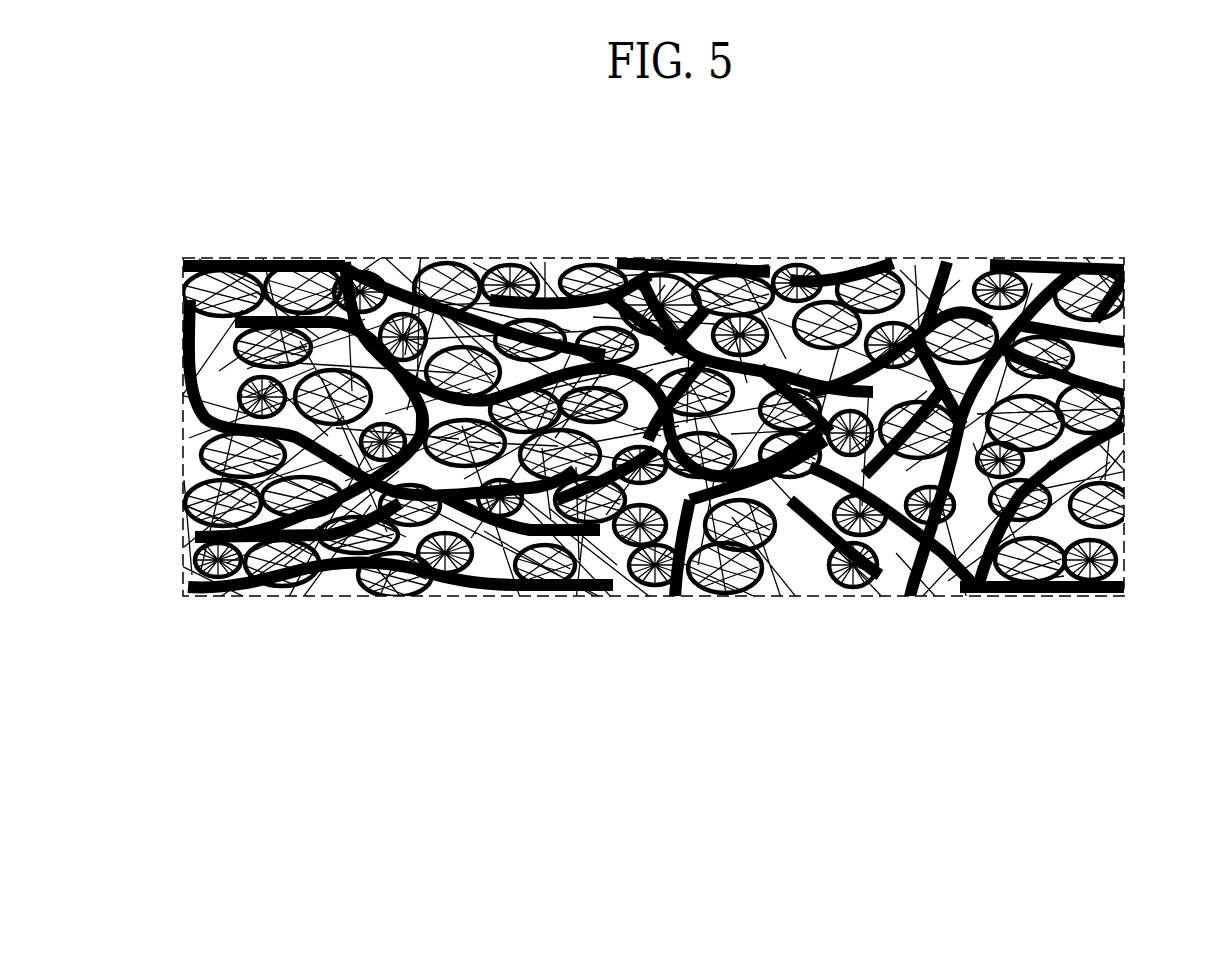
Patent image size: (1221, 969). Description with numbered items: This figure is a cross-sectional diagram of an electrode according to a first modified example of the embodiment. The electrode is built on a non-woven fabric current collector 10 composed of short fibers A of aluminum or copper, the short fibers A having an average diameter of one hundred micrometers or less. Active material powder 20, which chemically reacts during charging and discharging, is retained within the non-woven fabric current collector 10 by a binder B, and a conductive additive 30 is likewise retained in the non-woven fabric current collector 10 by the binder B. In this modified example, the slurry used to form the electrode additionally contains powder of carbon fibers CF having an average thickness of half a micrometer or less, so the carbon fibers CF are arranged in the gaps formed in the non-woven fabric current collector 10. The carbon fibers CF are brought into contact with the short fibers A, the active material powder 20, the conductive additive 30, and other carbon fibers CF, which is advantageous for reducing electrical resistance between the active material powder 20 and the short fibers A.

The non-woven fabric current collector 10 is at (1086, 258).
The active material powder 20 is at (430, 258).
The conductive additive 30 is at (487, 258).
The short fibers A is at (208, 258).
The binder B is at (924, 258).
The carbon fibers CF is at (545, 258).